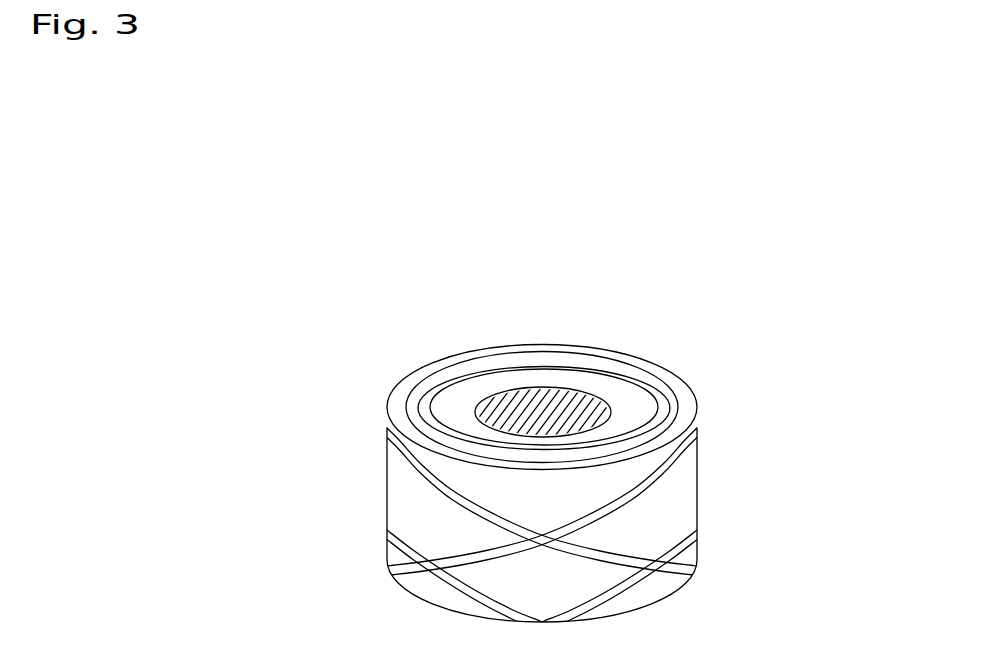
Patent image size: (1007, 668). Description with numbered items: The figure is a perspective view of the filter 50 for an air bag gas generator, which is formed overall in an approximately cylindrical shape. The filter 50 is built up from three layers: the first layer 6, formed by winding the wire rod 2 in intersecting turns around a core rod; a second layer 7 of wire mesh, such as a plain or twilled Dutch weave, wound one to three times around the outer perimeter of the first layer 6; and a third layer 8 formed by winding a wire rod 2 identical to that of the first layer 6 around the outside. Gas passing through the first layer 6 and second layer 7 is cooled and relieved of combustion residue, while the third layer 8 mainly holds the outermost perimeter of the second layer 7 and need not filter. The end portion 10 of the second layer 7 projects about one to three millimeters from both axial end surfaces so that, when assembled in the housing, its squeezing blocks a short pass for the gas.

The filter 50 is at (845, 419).
The first layer 6 is at (603, 382).
The end portion of the second layer 10 is at (668, 380).
The second layer 7 is at (542, 407).
The wire rod 2 is at (673, 549).
The third layer 8 is at (542, 535).